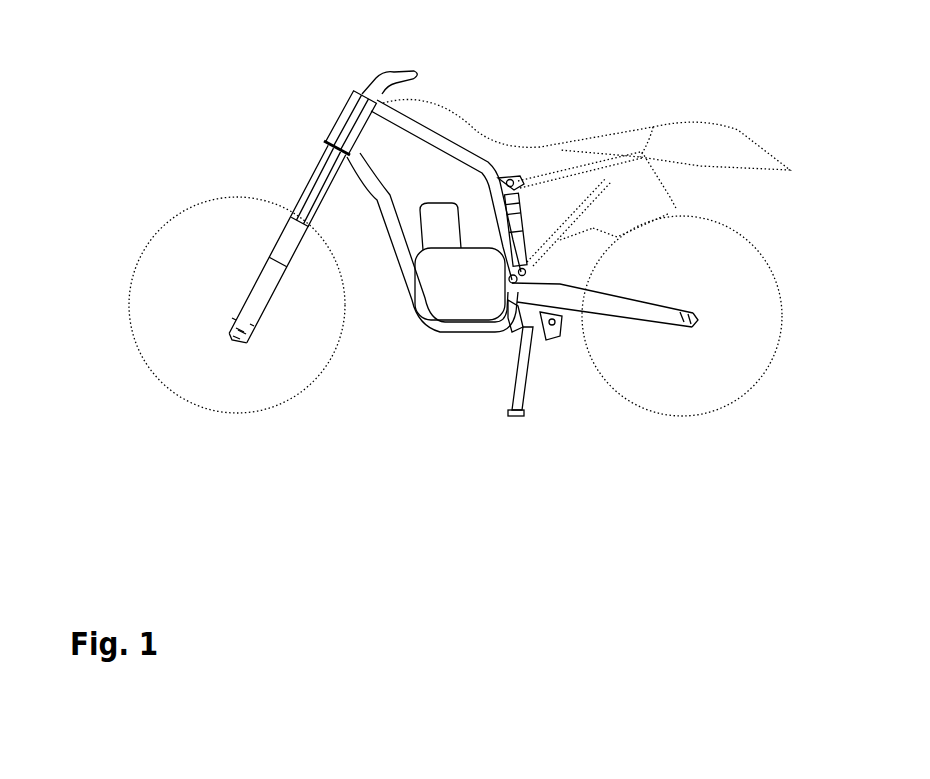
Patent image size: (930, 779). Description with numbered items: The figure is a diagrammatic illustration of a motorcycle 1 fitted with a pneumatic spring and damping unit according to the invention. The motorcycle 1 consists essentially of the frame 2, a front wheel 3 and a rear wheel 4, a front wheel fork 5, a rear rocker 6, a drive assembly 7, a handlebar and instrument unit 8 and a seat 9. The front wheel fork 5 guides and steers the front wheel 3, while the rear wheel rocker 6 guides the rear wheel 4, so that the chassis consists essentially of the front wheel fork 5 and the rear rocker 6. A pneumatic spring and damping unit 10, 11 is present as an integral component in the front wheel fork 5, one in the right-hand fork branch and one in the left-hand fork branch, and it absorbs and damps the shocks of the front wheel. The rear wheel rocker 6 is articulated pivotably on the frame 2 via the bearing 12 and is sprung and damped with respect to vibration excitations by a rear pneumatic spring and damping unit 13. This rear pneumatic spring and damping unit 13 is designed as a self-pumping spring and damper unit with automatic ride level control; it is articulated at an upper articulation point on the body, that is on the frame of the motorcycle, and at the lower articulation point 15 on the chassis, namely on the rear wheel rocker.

The motorcycle 1 is at (280, 98).
The frame 2 is at (383, 202).
The front wheel 3 is at (173, 322).
The rear wheel 4 is at (642, 367).
The front wheel fork 5 is at (255, 285).
The rear rocker 6 is at (582, 297).
The drive assembly 7 is at (453, 273).
The handlebar and instrument unit 8 is at (372, 83).
The seat 9 is at (582, 157).
The pneumatic spring and damping unit 10 is at (315, 188).
The pneumatic spring and damping unit 11 is at (315, 188).
The bearing 12 is at (510, 297).
The rear pneumatic spring and damping unit 13 is at (523, 235).
The lower articulation point 15 is at (552, 322).